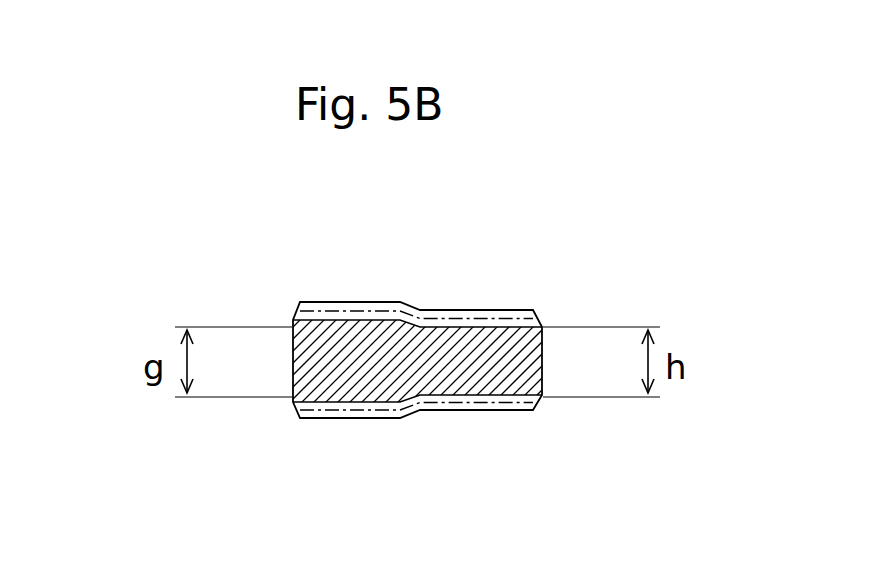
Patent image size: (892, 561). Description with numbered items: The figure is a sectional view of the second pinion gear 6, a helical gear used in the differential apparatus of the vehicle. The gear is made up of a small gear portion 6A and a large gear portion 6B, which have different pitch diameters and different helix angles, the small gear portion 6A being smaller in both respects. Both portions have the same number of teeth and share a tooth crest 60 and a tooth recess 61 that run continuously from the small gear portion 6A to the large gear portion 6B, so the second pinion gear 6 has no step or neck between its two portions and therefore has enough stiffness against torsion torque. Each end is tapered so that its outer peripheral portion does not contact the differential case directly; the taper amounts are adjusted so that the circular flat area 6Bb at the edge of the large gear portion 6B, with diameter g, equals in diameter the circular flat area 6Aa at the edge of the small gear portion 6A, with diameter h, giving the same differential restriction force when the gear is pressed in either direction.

The second pinion gear 6 is at (447, 273).
The small gear portion 6A is at (496, 367).
The large gear portion 6B is at (332, 343).
The circular flat area of the edge of the small gear portion 6Aa is at (542, 358).
The circular flat area of the edge of the large gear portion 6Bb is at (293, 350).
The tooth crest 60 is at (348, 410).
The tooth recess 61 is at (514, 320).